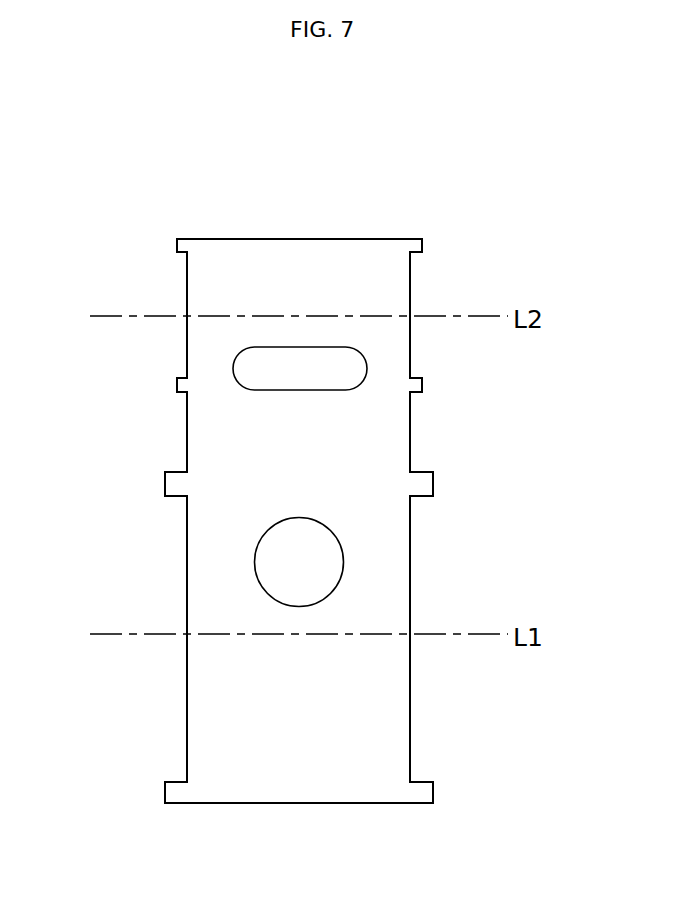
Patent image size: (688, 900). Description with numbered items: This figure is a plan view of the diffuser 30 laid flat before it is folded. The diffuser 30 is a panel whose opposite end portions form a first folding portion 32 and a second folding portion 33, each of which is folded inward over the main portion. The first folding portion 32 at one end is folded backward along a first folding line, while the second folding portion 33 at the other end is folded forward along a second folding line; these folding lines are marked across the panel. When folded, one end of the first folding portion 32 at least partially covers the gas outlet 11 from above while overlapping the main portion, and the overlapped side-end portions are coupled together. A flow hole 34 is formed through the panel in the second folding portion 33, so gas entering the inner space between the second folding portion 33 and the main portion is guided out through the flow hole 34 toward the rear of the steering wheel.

The diffuser 30 is at (426, 222).
The second folding portion 33 is at (410, 275).
The first folding portion 32 is at (410, 715).
The flow hole 34 is at (322, 362).
The gas outlet 11 is at (302, 557).